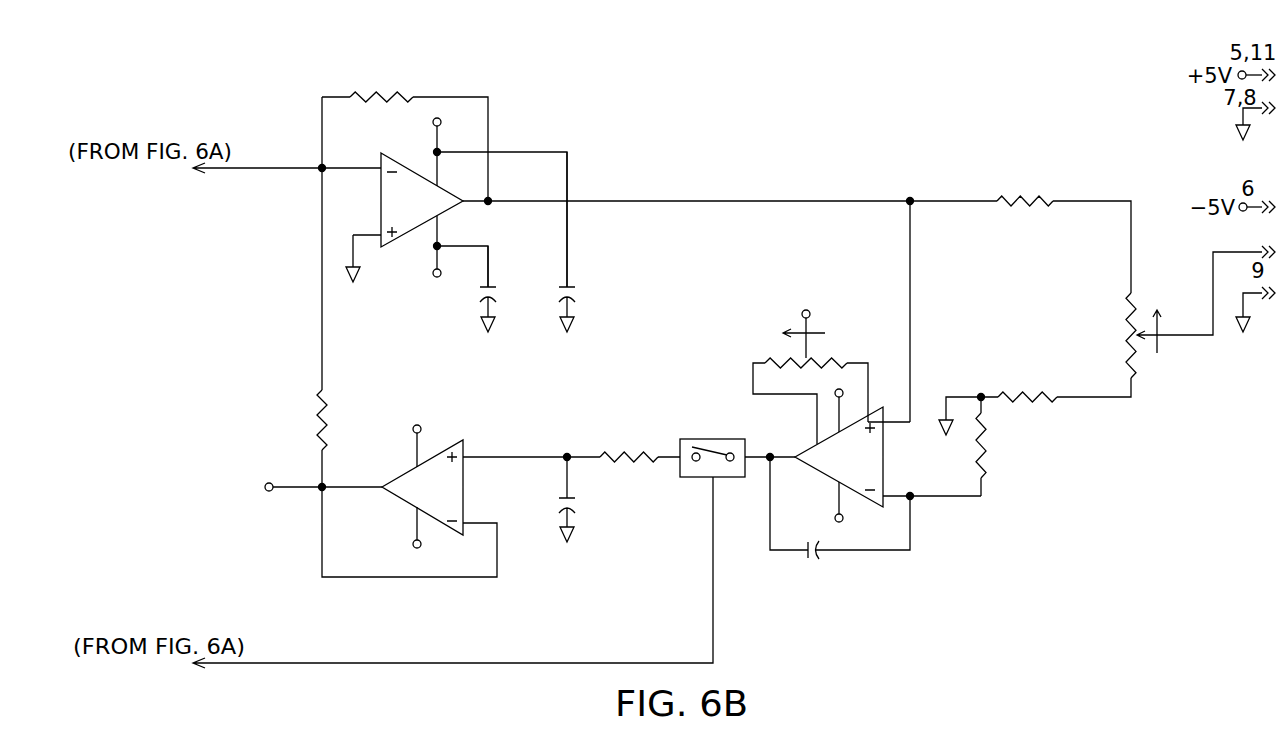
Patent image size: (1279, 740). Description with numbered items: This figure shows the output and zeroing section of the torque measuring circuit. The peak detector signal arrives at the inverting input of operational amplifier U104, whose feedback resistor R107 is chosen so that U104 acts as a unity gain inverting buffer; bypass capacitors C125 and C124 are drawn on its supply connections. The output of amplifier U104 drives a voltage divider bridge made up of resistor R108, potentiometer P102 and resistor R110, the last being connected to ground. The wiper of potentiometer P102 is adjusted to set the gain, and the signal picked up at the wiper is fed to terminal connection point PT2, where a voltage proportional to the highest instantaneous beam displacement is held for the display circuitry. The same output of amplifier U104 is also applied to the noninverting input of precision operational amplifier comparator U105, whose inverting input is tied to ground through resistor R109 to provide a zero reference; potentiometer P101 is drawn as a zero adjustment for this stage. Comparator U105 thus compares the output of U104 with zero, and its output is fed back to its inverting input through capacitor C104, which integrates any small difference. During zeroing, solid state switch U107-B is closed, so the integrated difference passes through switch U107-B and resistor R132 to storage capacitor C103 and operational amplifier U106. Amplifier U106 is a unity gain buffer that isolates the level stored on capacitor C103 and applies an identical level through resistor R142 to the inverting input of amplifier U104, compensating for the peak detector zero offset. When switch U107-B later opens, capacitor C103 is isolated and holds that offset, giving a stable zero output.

The feedback resistor R107 is at (405, 130).
The operational amplifier U104 is at (456, 208).
The bypass capacitor C125 is at (515, 289).
The bypass capacitor C124 is at (594, 242).
The resistor R142 is at (293, 420).
The operational amplifier U106 is at (432, 488).
The resistor R132 is at (638, 455).
The storage capacitor C103 is at (628, 502).
The solid state switch U107-B is at (716, 457).
The operational amplifier comparator U105 is at (827, 452).
The zero adjust potentiometer P101 is at (807, 324).
The capacitor C104 is at (840, 523).
The resistor R108 is at (1025, 187).
The potentiometer P102 is at (1130, 326).
The resistor R110 is at (1026, 382).
The resistor R109 is at (1013, 446).
The terminal connection point PT2 is at (1206, 285).